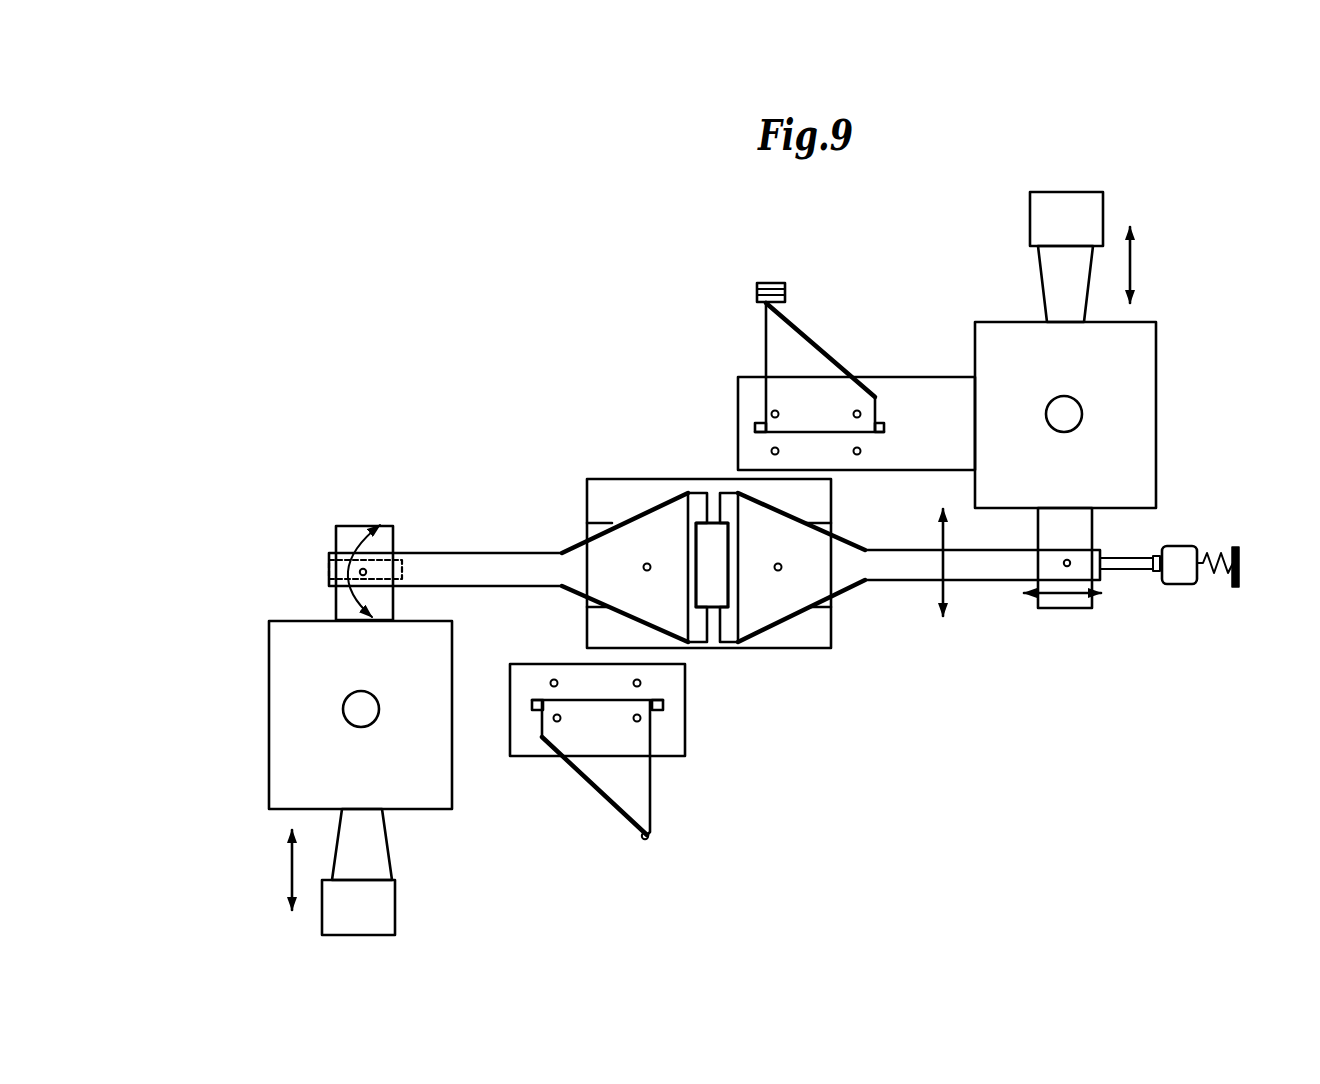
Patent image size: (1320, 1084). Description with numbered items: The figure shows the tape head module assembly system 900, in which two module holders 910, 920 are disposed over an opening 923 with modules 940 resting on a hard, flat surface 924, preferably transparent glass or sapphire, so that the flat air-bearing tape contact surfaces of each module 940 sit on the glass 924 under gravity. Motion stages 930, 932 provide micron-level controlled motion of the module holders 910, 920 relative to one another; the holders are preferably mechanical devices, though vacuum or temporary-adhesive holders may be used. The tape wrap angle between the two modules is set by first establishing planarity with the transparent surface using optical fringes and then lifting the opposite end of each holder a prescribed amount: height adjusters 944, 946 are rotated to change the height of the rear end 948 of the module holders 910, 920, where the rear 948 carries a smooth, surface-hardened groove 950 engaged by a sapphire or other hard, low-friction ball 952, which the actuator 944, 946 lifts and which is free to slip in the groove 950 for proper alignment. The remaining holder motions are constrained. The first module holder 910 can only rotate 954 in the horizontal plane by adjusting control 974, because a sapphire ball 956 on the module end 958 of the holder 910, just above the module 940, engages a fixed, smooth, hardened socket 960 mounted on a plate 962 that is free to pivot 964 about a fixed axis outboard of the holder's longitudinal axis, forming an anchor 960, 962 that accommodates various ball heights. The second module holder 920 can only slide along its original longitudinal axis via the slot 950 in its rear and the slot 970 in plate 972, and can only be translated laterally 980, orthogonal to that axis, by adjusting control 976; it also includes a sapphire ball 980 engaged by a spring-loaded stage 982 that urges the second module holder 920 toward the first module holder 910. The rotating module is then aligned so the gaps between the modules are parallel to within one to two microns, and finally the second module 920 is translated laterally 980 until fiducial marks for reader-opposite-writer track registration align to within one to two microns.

The crimping apparatus 900 is at (452, 180).
The first module holder 910 is at (447, 553).
The second module holder 920 is at (973, 582).
The opening 923 is at (722, 543).
The hard flat surface 924 is at (795, 650).
The motion stage 930 is at (269, 670).
The motion stage 932 is at (1157, 385).
The module 940 is at (690, 492).
The height adjuster 944 is at (348, 720).
The height adjuster 946 is at (1077, 426).
The rear end 948 is at (328, 568).
The groove 950 is at (331, 553).
The ball 952 is at (366, 574).
The rotation 954 is at (353, 546).
The sapphire ball 956 is at (612, 527).
The module end 958 is at (647, 560).
The socket 960 is at (648, 838).
The plate 962 is at (600, 776).
The pivot 964 is at (663, 710).
The slot 970 is at (758, 283).
The plate 972 is at (797, 313).
The control 974 is at (395, 905).
The control 976 is at (1103, 195).
The lateral translation 980 is at (940, 588).
The spring-loaded stage 982 is at (1190, 546).